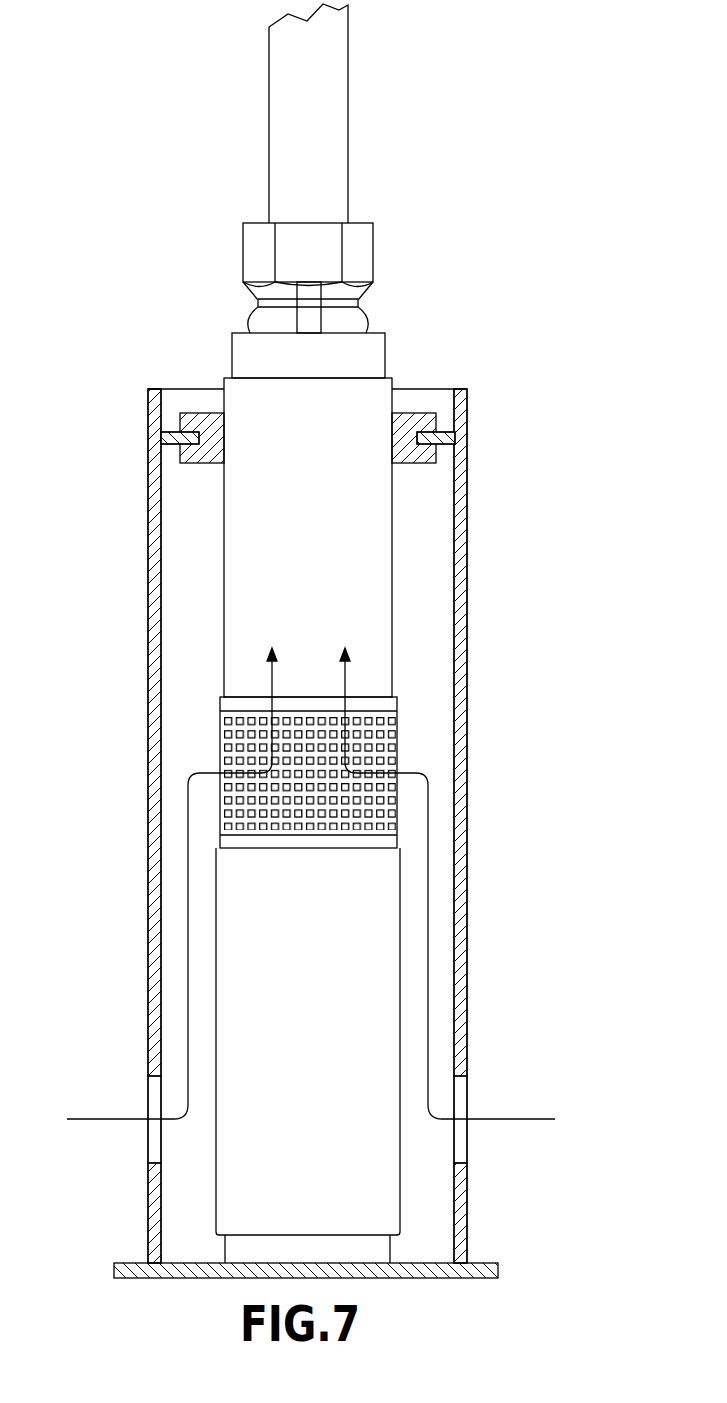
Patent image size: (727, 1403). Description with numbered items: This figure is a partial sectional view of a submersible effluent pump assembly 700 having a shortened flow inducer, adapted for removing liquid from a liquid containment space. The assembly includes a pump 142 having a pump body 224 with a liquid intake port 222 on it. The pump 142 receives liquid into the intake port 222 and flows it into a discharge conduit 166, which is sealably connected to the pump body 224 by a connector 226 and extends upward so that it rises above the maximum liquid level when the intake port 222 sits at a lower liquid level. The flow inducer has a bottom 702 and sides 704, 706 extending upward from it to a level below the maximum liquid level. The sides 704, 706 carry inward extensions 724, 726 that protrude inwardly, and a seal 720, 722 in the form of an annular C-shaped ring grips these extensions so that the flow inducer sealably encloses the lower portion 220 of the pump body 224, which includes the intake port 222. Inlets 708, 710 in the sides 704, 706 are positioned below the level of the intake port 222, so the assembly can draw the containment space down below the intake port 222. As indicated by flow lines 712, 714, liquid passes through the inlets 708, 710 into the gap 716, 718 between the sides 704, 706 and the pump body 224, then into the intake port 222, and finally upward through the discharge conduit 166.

The discharge conduit 166 is at (348, 112).
The connector 226 is at (373, 250).
The pump 142 is at (388, 357).
The submersible effluent pump assembly 700 is at (516, 306).
The pump body 224 is at (287, 536).
The liquid intake port 222 is at (305, 832).
The lower portion of the pump body 220 is at (287, 1071).
The flow inducer side 706 is at (148, 694).
The flow inducer side 704 is at (467, 690).
The seal 722 is at (198, 463).
The seal 720 is at (420, 463).
The inward extension 726 is at (173, 432).
The inward extension 724 is at (448, 432).
The gap 718 is at (175, 912).
The gap 716 is at (440, 912).
The flow line 714 is at (108, 1117).
The flow line 712 is at (510, 1119).
The inlet 710 is at (153, 1141).
The inlet 708 is at (467, 1141).
The bottom of the flow inducer 702 is at (170, 1278).